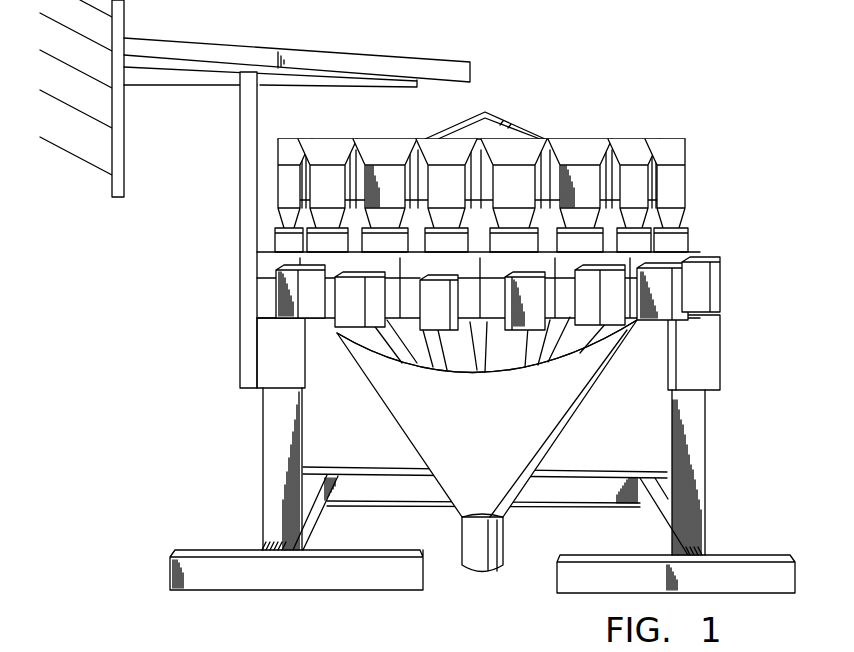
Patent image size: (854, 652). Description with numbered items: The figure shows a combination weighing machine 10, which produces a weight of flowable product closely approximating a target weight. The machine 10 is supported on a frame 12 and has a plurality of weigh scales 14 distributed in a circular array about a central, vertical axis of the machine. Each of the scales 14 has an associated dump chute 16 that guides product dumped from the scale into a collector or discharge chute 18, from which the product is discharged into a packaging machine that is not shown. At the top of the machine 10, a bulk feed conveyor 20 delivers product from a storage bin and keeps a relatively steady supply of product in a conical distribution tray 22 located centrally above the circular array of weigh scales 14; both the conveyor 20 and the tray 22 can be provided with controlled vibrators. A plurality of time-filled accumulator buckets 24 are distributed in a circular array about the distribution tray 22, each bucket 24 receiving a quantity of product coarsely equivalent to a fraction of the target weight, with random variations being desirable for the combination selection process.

The combination weighing machine 10 is at (565, 125).
The frame 12 is at (705, 437).
The weigh scales 14 is at (673, 262).
The dump chute 16 is at (597, 343).
The discharge chute 18 is at (585, 396).
The bulk feed conveyor 20 is at (327, 52).
The conical distribution tray 22 is at (513, 126).
The accumulator buckets 24 is at (673, 139).